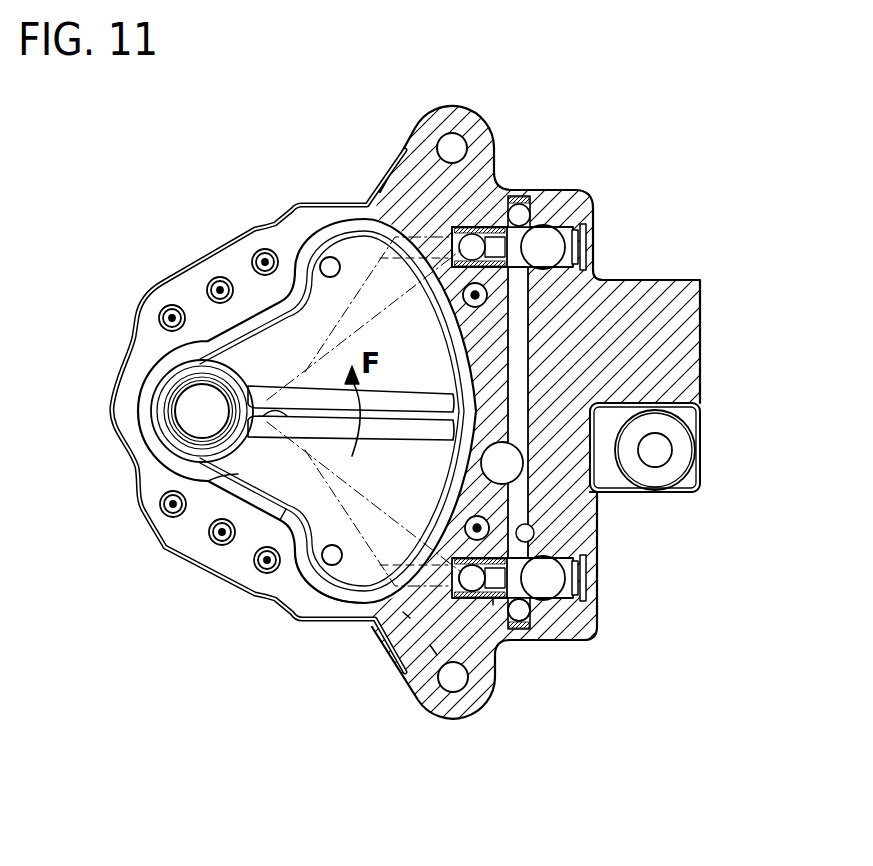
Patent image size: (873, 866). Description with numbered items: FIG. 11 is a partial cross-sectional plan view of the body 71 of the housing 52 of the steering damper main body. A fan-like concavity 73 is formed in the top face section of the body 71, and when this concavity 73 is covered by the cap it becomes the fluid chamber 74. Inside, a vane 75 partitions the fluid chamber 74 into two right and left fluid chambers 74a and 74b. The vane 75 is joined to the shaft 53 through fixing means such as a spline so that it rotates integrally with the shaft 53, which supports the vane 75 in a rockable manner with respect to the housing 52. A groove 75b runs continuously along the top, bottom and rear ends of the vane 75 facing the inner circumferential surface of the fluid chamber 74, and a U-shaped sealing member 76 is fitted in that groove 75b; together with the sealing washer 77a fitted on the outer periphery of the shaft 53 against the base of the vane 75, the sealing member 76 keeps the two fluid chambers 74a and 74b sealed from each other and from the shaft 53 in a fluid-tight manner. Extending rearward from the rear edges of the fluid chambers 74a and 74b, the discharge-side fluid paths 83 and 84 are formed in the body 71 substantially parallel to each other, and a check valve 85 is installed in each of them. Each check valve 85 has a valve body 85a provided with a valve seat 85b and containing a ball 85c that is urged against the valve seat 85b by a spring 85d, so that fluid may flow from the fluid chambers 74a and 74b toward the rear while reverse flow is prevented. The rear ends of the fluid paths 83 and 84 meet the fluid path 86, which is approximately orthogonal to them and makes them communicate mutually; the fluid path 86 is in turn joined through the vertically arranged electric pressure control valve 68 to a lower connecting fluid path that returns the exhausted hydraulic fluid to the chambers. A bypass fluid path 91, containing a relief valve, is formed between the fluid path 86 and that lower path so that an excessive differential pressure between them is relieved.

The housing 52 is at (605, 165).
The shaft 53 is at (192, 422).
The pressure control valve 68 is at (516, 472).
The body 71 is at (225, 267).
The concavity 73 is at (288, 512).
The fluid chamber 74 is at (307, 424).
The fluid chamber 74a is at (337, 574).
The fluid chamber 74b is at (318, 278).
The vane 75 is at (408, 400).
The groove 75b is at (238, 472).
The sealing member 76 is at (250, 378).
The washer for sealing 77a is at (157, 408).
The fluid path 83 is at (403, 610).
The fluid path 84 is at (447, 246).
The check valve 85 is at (492, 202).
The valve body 85a is at (495, 603).
The valve seat 85b is at (433, 648).
The ball 85c is at (470, 573).
The spring 85d is at (524, 602).
The fluid path 86 is at (520, 326).
The bypass fluid path 91 is at (531, 534).